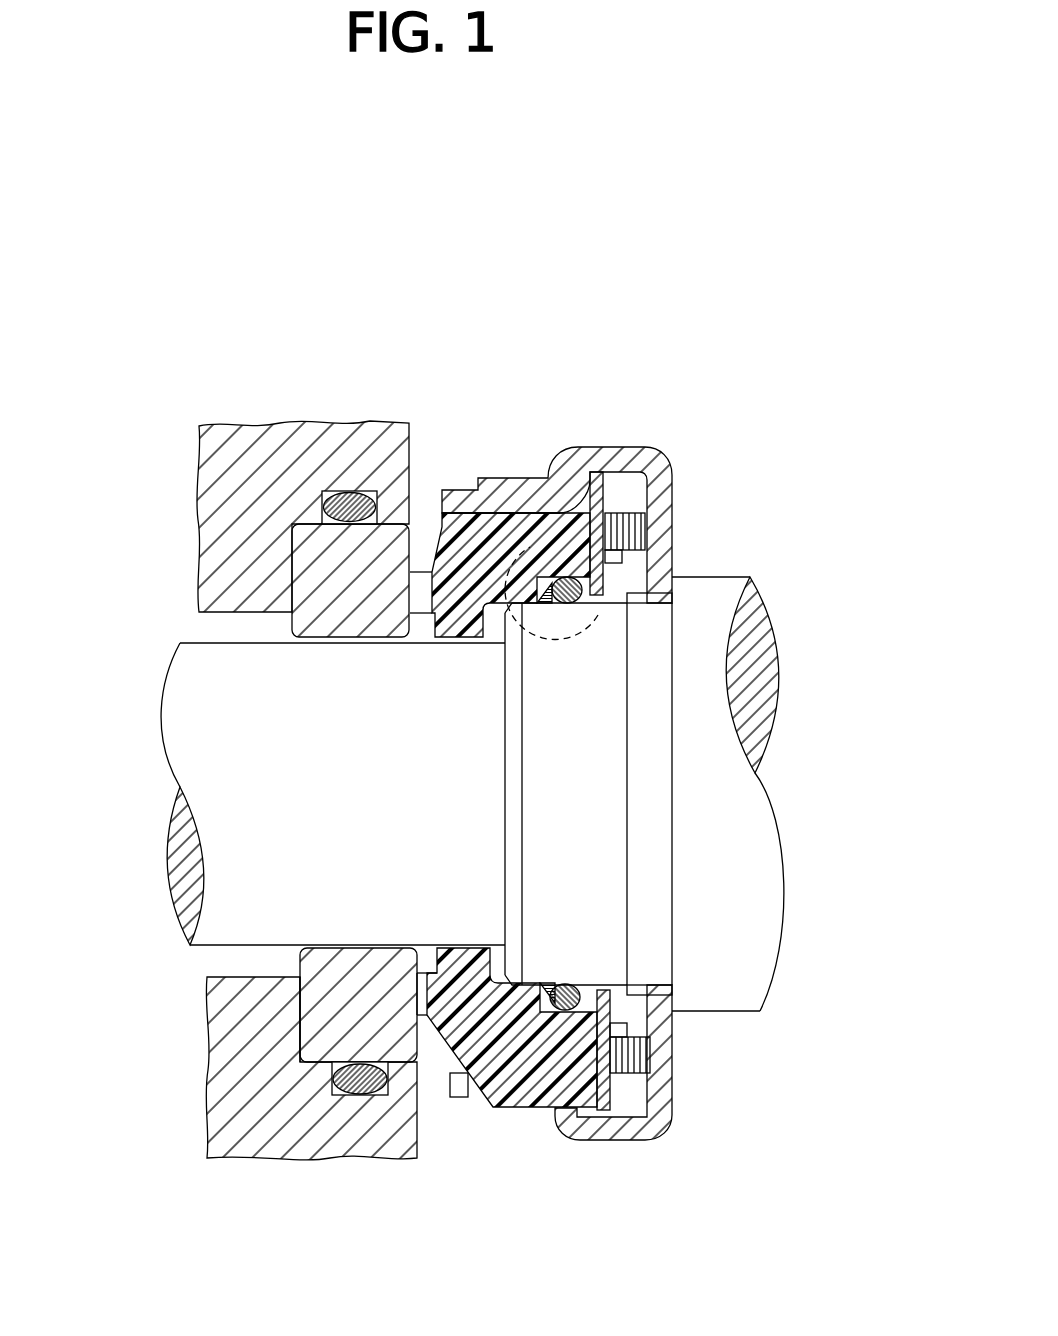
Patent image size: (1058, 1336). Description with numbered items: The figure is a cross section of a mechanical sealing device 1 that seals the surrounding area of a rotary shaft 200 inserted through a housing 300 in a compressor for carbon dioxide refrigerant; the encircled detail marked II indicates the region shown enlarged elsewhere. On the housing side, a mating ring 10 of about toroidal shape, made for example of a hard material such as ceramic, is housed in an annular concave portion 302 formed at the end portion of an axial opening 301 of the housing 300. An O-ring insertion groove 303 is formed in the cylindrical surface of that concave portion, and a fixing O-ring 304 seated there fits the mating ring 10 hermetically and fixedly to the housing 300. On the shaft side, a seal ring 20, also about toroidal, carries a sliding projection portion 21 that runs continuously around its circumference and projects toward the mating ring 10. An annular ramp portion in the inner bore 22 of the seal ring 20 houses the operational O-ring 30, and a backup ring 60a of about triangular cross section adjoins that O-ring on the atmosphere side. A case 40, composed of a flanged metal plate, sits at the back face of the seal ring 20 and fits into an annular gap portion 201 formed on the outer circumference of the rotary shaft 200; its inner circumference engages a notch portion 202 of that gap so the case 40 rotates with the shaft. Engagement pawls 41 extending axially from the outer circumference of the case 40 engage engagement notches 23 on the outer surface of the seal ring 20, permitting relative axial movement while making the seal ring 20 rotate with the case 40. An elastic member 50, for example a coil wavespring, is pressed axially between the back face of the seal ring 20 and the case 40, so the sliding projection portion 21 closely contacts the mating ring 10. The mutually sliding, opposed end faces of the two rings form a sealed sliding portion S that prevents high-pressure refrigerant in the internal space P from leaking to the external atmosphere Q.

The mechanical sealing device 1 is at (800, 401).
The mating ring 10 is at (322, 568).
The seal ring 20 is at (453, 568).
The sliding projection portion 21 is at (424, 1032).
The inner bore 22 is at (528, 978).
The engagement notches 23 is at (490, 530).
The operational O-ring 30 is at (578, 605).
The case 40 is at (633, 448).
The engagement pawls 41 is at (520, 498).
The elastic member 50 is at (668, 492).
The backup ring 60a is at (540, 605).
The rotary shaft 200 is at (250, 882).
The annular gap portion 201 is at (655, 705).
The notch portion 202 is at (650, 568).
The housing 300 is at (272, 467).
The axial opening 301 is at (236, 977).
The annular concave portion 302 is at (330, 1027).
The O-ring insertion groove 303 is at (360, 1100).
The fixing O-ring 304 is at (368, 1098).
The sealed sliding portion S is at (414, 562).
The internal space P is at (882, 458).
The external space Q is at (200, 630).
The section line II is at (660, 540).